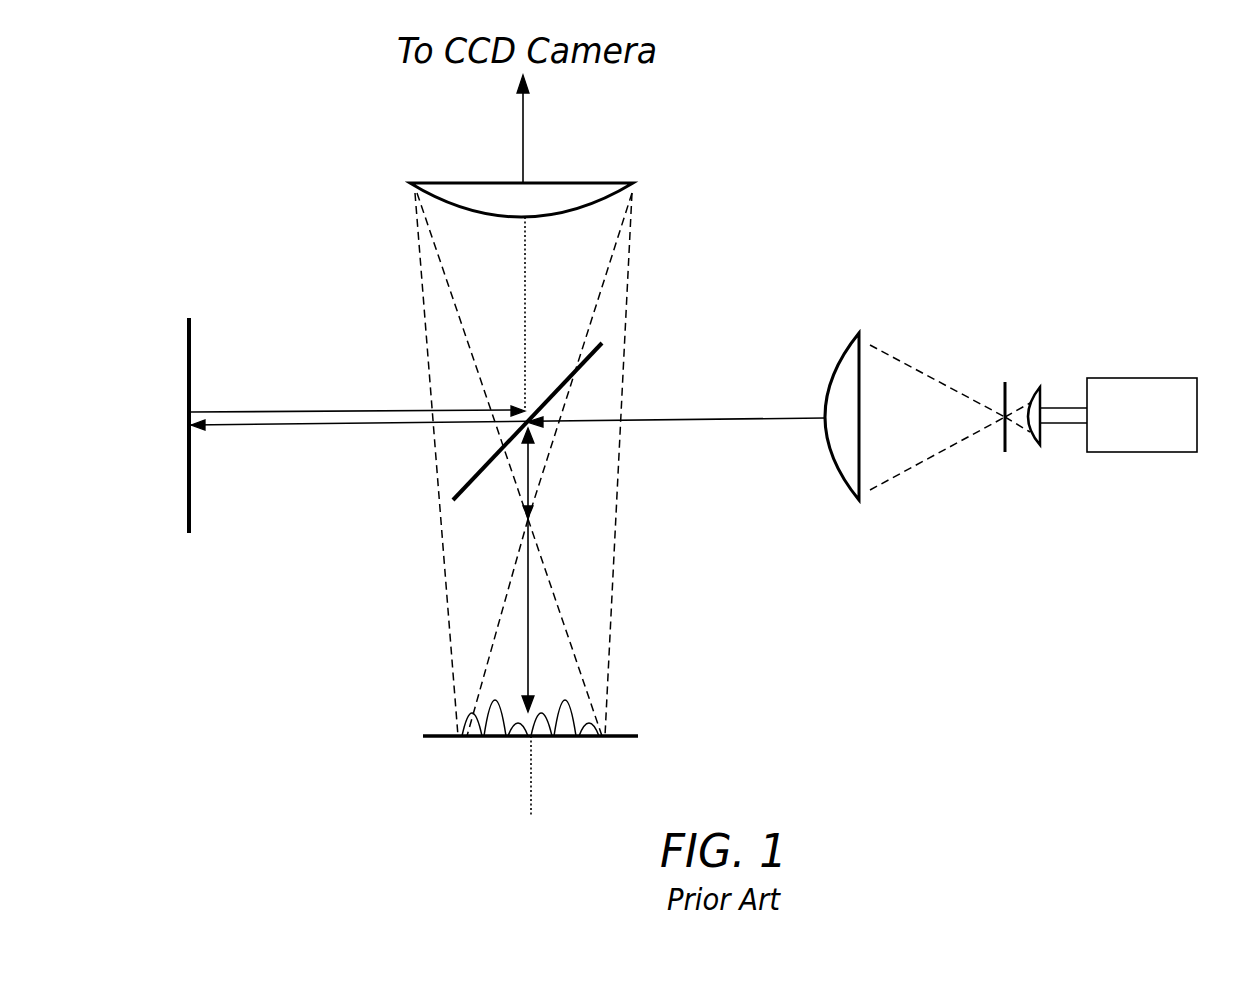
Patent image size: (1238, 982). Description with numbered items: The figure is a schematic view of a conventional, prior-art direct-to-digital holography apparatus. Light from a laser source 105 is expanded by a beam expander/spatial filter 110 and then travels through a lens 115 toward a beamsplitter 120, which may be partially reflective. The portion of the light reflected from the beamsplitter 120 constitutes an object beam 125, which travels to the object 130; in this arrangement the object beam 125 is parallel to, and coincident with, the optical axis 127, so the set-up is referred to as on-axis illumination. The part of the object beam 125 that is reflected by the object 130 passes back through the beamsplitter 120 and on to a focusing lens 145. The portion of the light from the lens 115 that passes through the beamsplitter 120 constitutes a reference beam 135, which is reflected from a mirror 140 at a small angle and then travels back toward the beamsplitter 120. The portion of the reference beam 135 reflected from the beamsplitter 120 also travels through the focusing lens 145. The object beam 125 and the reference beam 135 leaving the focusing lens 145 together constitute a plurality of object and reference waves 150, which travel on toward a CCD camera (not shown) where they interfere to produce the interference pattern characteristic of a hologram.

The laser source 105 is at (1127, 390).
The beam expander/spatial filter 110 is at (1017, 397).
The lens 115 is at (829, 447).
The beamsplitter 120 is at (576, 421).
The object beam 125 is at (600, 570).
The optical axis 127 is at (615, 517).
The object 130 is at (528, 745).
The reference beam 135 is at (357, 387).
The mirror 140 is at (261, 440).
The focusing lens 145 is at (499, 239).
The object and reference waves 150 is at (565, 129).